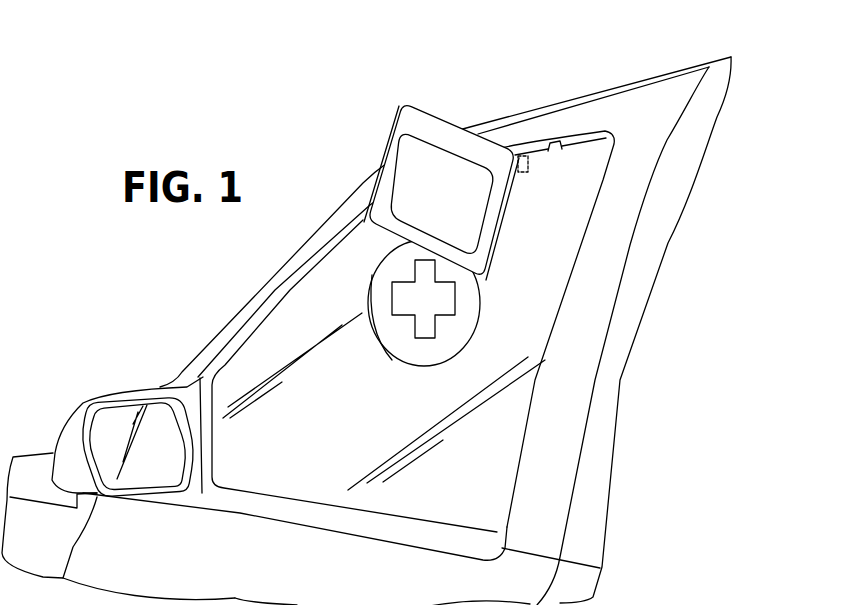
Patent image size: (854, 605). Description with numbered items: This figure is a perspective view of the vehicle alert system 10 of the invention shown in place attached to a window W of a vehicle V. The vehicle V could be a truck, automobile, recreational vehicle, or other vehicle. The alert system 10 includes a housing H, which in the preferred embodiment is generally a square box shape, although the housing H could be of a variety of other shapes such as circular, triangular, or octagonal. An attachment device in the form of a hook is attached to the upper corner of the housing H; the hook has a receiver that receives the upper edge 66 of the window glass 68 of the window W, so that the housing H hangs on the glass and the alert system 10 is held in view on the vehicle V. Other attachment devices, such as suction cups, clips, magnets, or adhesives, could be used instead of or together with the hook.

The vehicle alert system 10 is at (428, 197).
The housing H is at (390, 121).
The vehicle V is at (699, 58).
The window W is at (302, 308).
The upper edge 66 is at (555, 148).
The window glass 68 is at (575, 177).